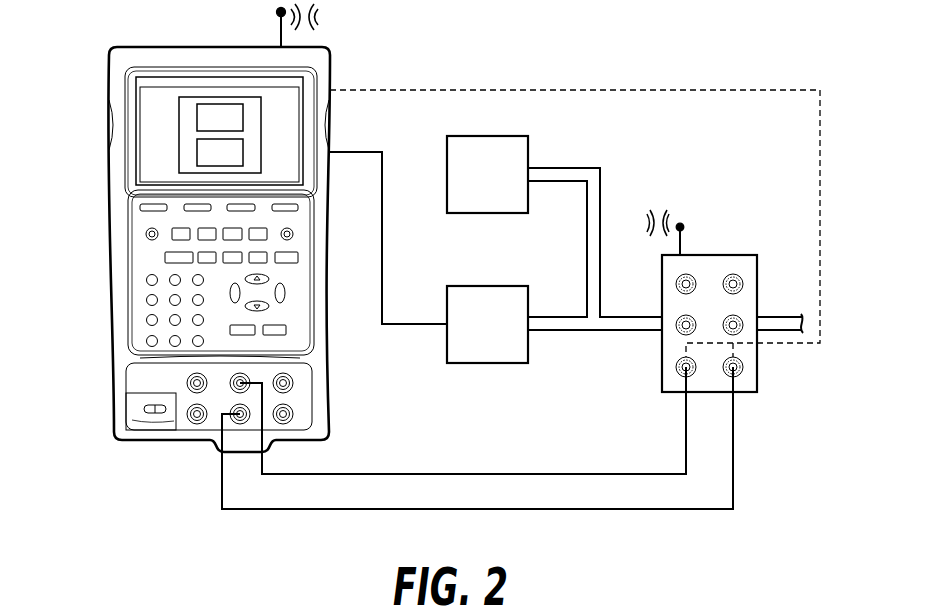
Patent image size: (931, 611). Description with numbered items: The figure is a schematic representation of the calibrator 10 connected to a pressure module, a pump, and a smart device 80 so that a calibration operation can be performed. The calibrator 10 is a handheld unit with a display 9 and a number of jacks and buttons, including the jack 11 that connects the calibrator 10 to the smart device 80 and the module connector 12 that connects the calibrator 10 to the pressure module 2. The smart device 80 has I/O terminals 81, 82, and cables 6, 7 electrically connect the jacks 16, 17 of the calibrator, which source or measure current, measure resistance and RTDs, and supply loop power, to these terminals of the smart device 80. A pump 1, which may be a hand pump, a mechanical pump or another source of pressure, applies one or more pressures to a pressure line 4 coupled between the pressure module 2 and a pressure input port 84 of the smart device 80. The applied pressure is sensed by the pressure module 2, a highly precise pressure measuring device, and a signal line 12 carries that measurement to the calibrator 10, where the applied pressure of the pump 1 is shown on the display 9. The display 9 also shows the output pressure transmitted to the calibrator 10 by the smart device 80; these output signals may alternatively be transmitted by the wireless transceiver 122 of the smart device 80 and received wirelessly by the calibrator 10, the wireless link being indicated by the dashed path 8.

The calibrator 10 is at (110, 49).
The jack 11 is at (333, 50).
The display 9 is at (200, 106).
The wireless communication link 8 is at (418, 90).
The module connector 12 is at (360, 152).
The pump 1 is at (529, 144).
The pressure module 2 is at (524, 305).
The pressure line 4 is at (568, 331).
The smart device 80 is at (758, 272).
The pressure input port 84 is at (660, 318).
The wireless transceiver 122 is at (667, 205).
The I/O terminal 81 is at (676, 364).
The I/O terminal 82 is at (745, 362).
The jack 16 is at (248, 379).
The jack 17 is at (248, 410).
The cable 6 is at (470, 474).
The cable 7 is at (460, 509).